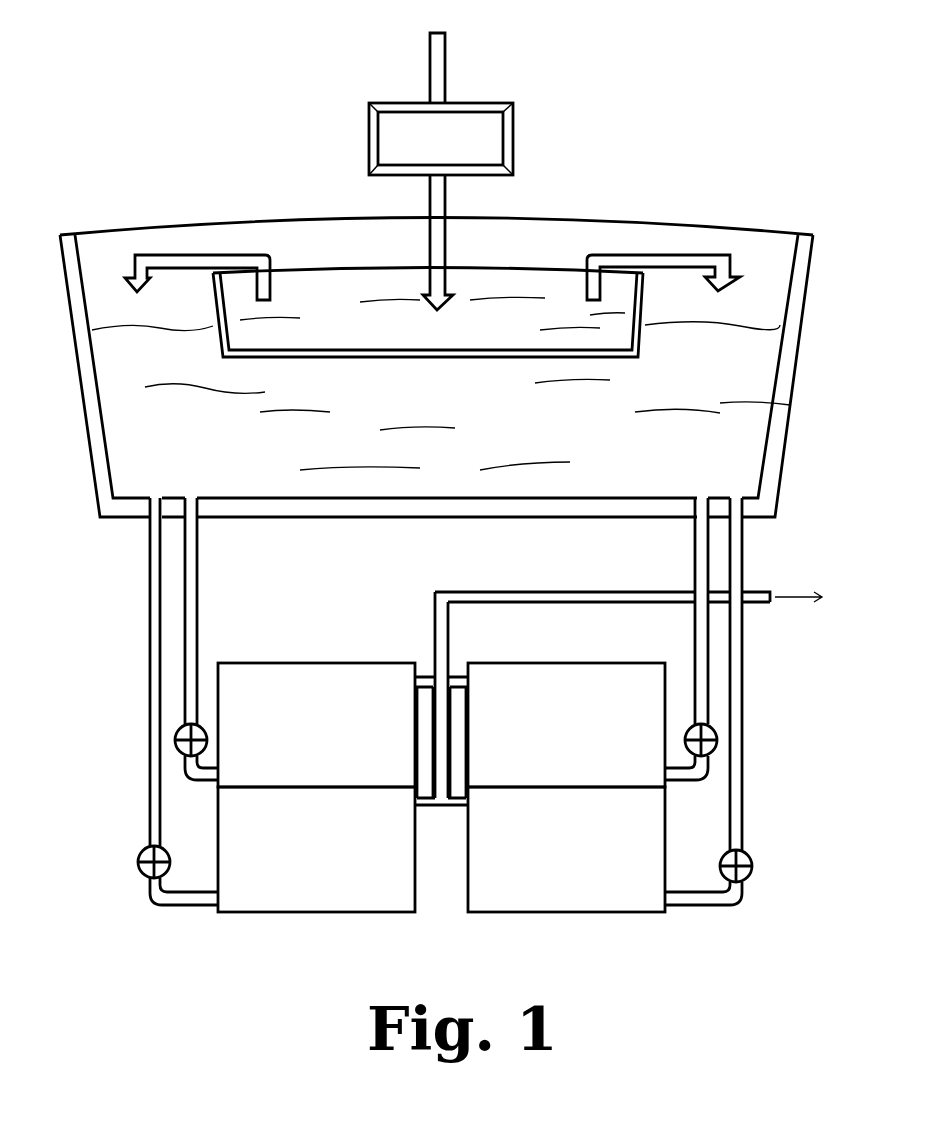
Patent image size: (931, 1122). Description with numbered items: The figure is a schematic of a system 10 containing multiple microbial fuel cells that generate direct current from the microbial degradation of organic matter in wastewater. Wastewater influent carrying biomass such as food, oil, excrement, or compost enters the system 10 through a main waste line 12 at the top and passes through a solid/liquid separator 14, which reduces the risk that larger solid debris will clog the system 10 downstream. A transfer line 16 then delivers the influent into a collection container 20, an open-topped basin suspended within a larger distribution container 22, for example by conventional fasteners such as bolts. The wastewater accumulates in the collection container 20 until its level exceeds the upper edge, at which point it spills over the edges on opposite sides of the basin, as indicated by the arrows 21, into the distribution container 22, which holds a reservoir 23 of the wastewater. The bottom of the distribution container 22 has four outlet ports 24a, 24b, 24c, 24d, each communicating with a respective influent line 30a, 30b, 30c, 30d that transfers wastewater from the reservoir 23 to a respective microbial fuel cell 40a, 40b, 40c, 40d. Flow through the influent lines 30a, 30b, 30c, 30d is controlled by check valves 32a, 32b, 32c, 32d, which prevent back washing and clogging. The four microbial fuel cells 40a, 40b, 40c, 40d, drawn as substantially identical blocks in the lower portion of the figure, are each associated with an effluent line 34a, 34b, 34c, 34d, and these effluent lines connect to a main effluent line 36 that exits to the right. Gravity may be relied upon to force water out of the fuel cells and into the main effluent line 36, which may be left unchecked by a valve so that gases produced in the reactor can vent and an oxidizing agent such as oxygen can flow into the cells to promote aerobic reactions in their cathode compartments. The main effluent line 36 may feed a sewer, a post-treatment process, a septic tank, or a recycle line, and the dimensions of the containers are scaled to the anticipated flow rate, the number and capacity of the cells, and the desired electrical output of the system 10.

The system 10 is at (176, 118).
The main waste line 12 is at (443, 62).
The solid/liquid separator 14 is at (400, 125).
The transfer line 16 is at (445, 200).
The collection container 20 is at (578, 262).
The arrows 21 is at (170, 262).
The distribution container 22 is at (95, 430).
The reservoir 23 is at (760, 418).
The outlet port 24a is at (156, 500).
The outlet port 24b is at (191, 500).
The outlet port 24c is at (700, 500).
The outlet port 24d is at (736, 500).
The influent line 30a is at (150, 594).
The influent line 30b is at (197, 572).
The influent line 30c is at (694, 570).
The influent line 30d is at (742, 573).
The check valve 32a is at (140, 862).
The check valve 32b is at (175, 742).
The check valve 32c is at (716, 742).
The check valve 32d is at (752, 870).
The effluent line 34a is at (421, 687).
The effluent line 34b is at (420, 808).
The effluent line 34c is at (462, 685).
The effluent line 34d is at (457, 808).
The main effluent line 36 is at (520, 598).
The microbial fuel cell 40a is at (290, 688).
The microbial fuel cell 40b is at (240, 897).
The microbial fuel cell 40c is at (558, 690).
The microbial fuel cell 40d is at (600, 893).